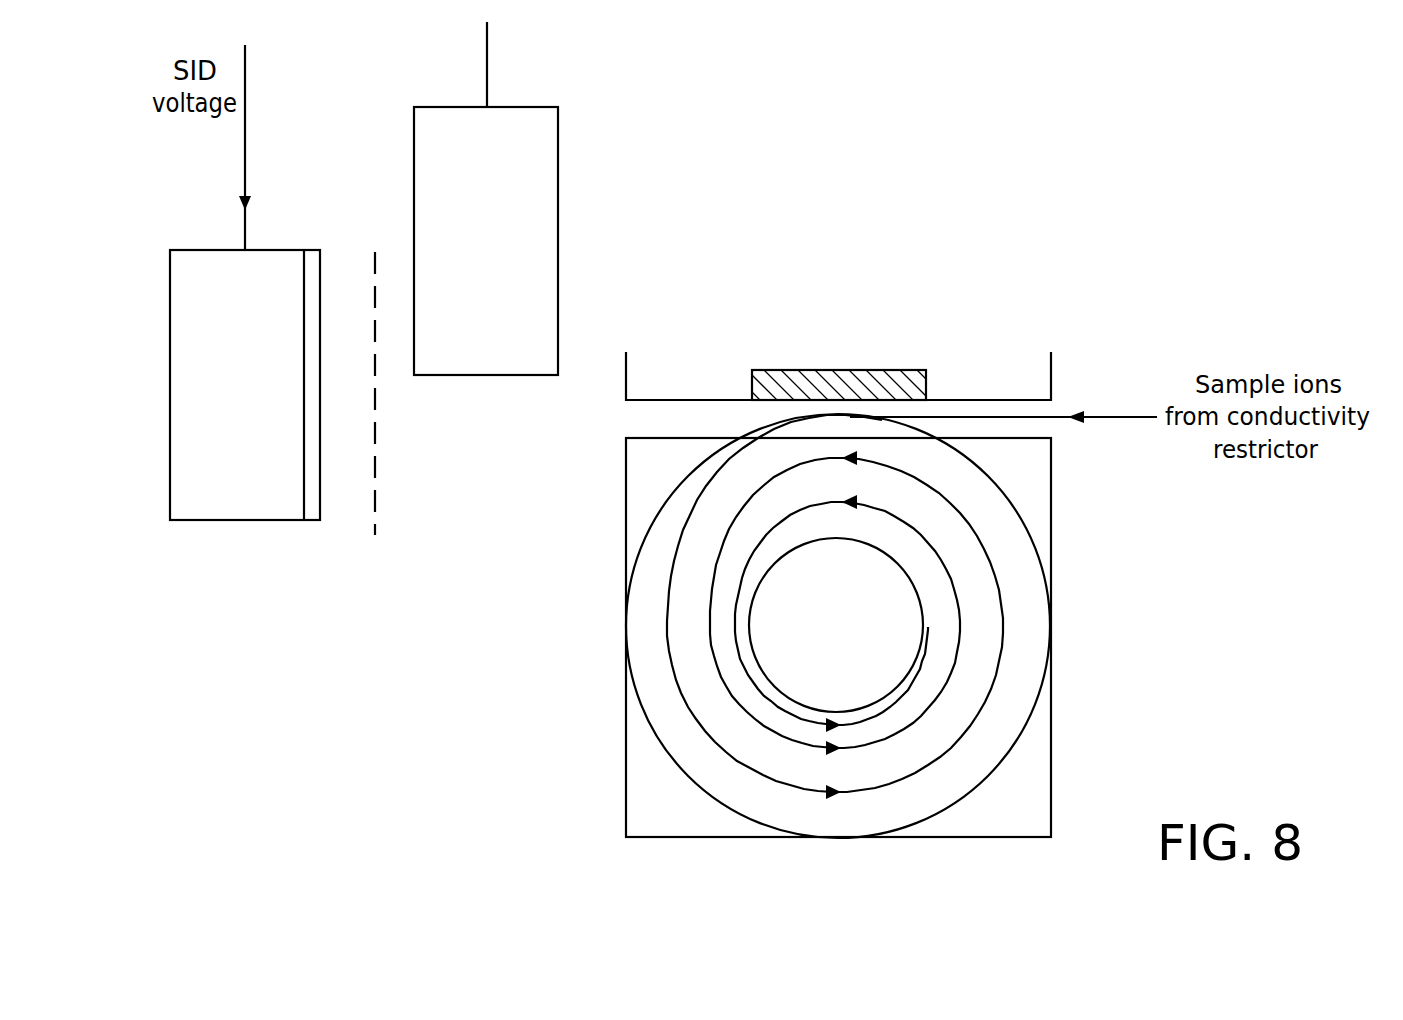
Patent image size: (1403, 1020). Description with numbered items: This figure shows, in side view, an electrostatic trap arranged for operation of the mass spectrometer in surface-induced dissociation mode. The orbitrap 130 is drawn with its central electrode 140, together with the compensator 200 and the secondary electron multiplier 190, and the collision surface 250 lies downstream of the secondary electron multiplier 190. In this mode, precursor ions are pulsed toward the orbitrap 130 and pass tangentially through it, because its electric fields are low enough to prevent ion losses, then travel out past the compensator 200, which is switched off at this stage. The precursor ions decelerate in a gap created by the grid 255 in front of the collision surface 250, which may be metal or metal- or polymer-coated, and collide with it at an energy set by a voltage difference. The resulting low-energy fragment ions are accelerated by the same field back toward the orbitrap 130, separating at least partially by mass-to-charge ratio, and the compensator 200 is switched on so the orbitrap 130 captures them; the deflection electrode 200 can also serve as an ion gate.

The orbitrap 130 is at (636, 793).
The electrode 140 is at (868, 623).
The secondary electron multiplier 190 is at (545, 231).
The compensator 200 is at (828, 381).
The collision surface 250 is at (309, 250).
The grid 255 is at (377, 487).